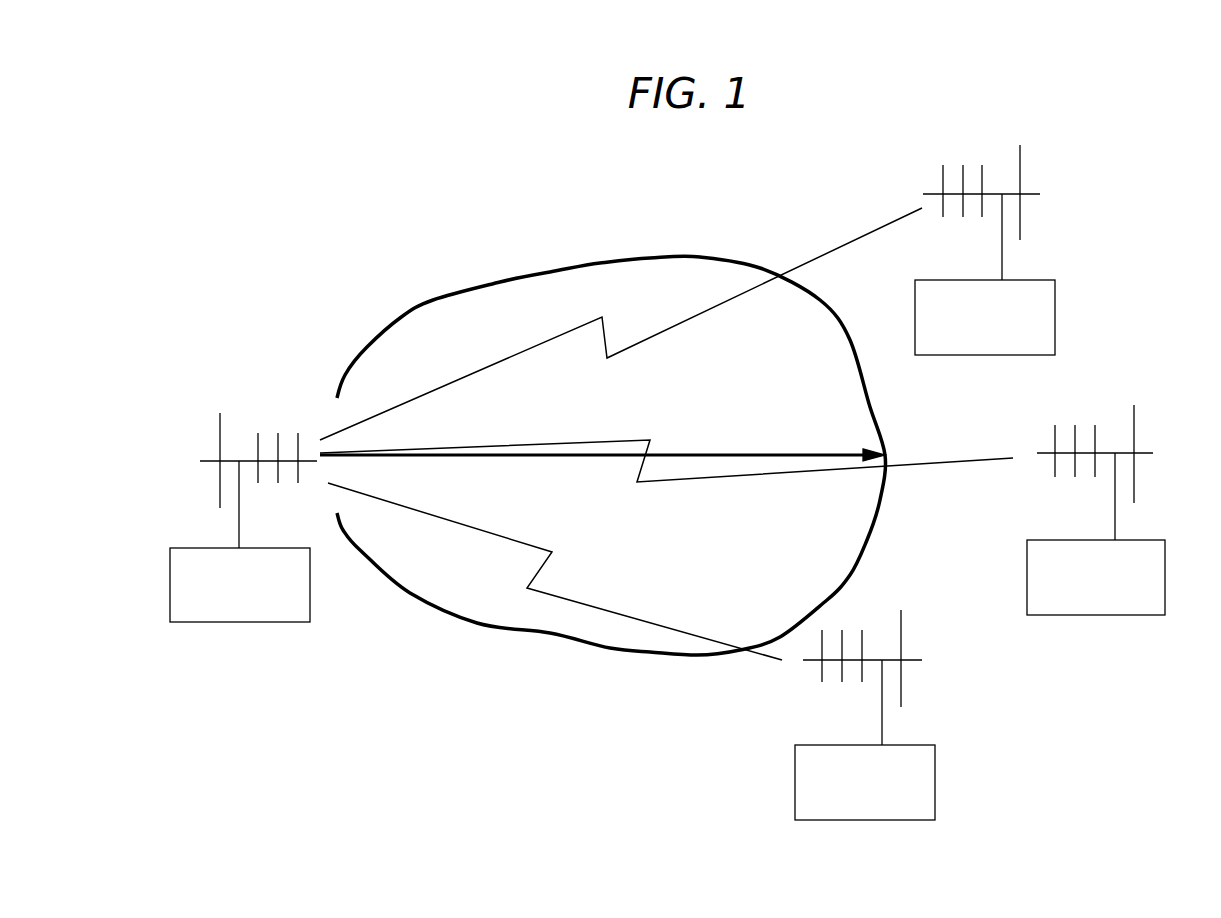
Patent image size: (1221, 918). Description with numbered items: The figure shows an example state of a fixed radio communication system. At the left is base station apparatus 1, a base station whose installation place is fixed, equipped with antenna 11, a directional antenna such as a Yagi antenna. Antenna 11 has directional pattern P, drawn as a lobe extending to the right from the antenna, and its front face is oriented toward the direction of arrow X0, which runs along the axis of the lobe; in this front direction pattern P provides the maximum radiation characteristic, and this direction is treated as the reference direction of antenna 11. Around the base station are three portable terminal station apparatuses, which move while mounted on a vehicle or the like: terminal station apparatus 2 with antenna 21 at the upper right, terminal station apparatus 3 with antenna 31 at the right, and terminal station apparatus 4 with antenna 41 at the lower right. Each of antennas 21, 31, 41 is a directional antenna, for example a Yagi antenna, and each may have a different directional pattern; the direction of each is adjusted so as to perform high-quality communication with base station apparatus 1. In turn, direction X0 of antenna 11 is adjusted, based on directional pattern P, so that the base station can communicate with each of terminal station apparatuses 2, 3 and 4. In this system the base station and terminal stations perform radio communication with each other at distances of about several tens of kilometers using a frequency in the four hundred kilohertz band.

The base station apparatus 1 is at (200, 624).
The antenna 11 is at (220, 482).
The terminal station apparatus 2 is at (1057, 322).
The antenna 21 is at (1035, 192).
The terminal station apparatus 3 is at (1060, 618).
The antenna 31 is at (1147, 452).
The terminal station apparatus 4 is at (825, 822).
The antenna 41 is at (903, 637).
The arrow X0 (front direction) X0 is at (718, 453).
The directional pattern P is at (503, 632).